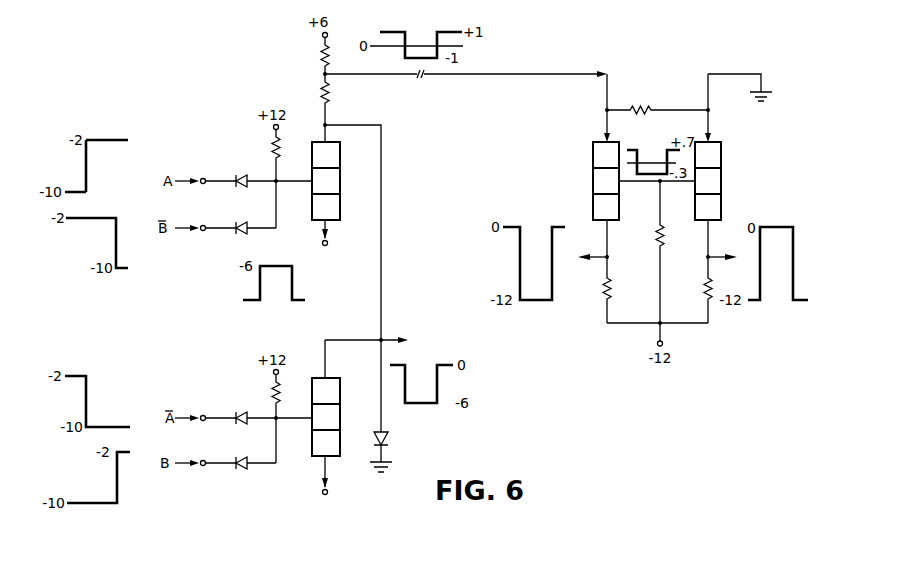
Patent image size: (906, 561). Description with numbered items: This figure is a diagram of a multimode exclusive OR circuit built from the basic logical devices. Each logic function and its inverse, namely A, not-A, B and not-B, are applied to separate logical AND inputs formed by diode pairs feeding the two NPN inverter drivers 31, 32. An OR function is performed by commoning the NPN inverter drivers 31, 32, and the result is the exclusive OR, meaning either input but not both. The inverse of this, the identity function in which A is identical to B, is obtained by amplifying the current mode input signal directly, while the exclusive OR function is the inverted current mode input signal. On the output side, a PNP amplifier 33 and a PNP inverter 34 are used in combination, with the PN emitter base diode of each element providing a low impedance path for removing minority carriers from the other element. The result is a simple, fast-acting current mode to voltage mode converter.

The NPN inverter driver 31 is at (348, 171).
The NPN inverter driver 32 is at (348, 404).
The PNP amplifier 33 is at (588, 180).
The PNP inverter 34 is at (731, 172).